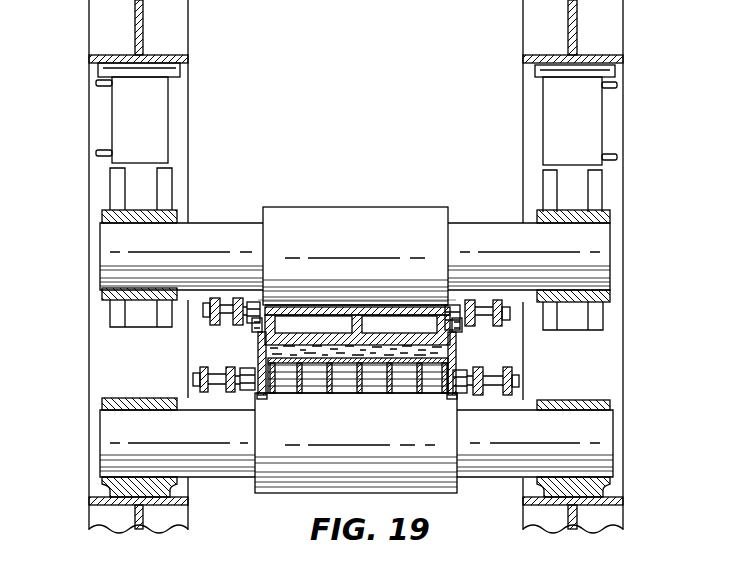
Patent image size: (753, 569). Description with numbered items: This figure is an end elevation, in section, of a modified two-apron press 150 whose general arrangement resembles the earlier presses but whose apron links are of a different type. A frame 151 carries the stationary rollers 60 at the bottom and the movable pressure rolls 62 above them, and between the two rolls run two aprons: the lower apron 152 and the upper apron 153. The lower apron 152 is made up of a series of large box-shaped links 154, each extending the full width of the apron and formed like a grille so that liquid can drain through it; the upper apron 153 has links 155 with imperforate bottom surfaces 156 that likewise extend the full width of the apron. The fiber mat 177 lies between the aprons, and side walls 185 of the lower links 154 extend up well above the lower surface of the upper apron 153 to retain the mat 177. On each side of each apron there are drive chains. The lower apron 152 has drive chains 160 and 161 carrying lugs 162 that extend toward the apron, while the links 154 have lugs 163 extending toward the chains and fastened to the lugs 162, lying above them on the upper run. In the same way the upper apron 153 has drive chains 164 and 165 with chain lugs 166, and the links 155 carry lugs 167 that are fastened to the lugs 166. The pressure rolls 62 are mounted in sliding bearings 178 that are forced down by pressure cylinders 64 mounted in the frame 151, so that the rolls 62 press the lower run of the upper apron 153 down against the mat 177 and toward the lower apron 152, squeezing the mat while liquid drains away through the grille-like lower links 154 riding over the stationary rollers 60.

The frame 151 is at (188, 25).
The pressure cylinder 64 is at (149, 120).
The sliding bearing 178 is at (612, 222).
The pressure roll 62 is at (380, 207).
The stationary roller 60 is at (290, 487).
The press 150 is at (242, 216).
The link 155 is at (295, 300).
The upper apron 153 is at (360, 313).
The imperforate bottom surface 156 is at (295, 322).
The mat 177 is at (372, 346).
The lower apron 152 is at (390, 393).
The link 154 is at (333, 383).
The side wall 185 is at (258, 356).
The lug 167 is at (258, 332).
The drive chain 164 is at (227, 304).
The chain lug 166 is at (254, 302).
The drive chain 165 is at (487, 308).
The lug 163 is at (200, 370).
The drive chain 160 is at (215, 383).
The drive chain 161 is at (497, 385).
The lug 162 is at (257, 397).